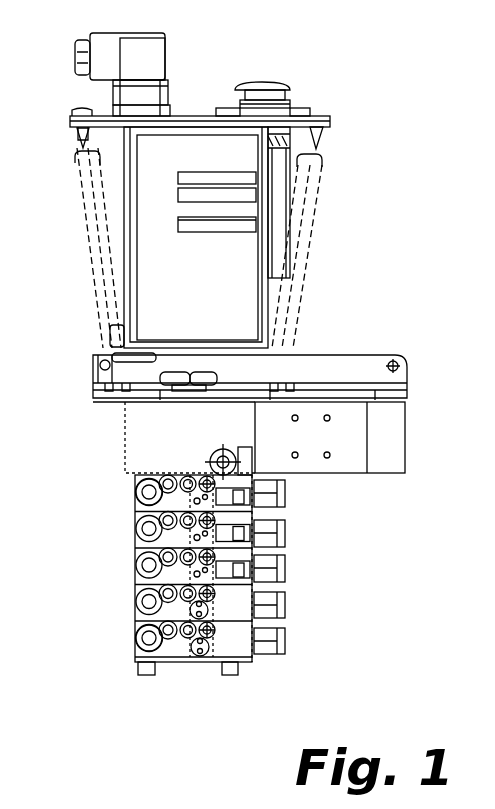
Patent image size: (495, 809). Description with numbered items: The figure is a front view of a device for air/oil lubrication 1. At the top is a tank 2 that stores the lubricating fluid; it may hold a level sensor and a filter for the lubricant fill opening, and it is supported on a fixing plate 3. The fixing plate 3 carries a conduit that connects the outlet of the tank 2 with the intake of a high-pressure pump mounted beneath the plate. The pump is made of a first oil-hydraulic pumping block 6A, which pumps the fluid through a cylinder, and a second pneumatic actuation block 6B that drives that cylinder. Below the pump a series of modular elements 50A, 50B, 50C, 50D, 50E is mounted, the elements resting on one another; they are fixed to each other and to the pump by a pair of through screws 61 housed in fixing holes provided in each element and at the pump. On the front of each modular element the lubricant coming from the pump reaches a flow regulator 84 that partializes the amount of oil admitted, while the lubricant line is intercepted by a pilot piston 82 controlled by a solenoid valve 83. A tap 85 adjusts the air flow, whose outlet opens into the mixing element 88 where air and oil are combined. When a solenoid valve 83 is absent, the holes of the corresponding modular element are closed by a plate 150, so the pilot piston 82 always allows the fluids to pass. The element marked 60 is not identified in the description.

The device for air/oil lubrication 1 is at (388, 79).
The tank 2 is at (317, 193).
The fixing plate 3 is at (360, 365).
The first oil-hydraulic pumping block 6A is at (140, 412).
The second pneumatic actuation block 6B is at (338, 434).
The modular element 50A is at (134, 481).
The modular element 50B is at (134, 517).
The modular element 50C is at (134, 554).
The modular element 50D is at (134, 590).
The modular element 50E is at (134, 626).
The manifold body 60 is at (182, 663).
The through screws 61 is at (150, 674).
The pilot piston 82 is at (200, 480).
The solenoid valve 83 is at (252, 552).
The flow regulator 84 is at (160, 479).
The tap 85 is at (255, 515).
The mixing element 88 is at (285, 535).
The plate 150 is at (212, 652).